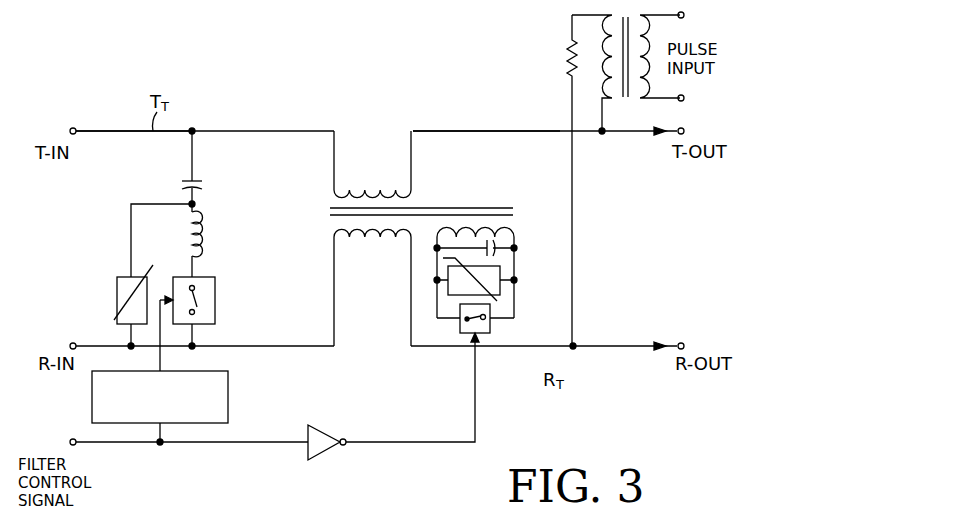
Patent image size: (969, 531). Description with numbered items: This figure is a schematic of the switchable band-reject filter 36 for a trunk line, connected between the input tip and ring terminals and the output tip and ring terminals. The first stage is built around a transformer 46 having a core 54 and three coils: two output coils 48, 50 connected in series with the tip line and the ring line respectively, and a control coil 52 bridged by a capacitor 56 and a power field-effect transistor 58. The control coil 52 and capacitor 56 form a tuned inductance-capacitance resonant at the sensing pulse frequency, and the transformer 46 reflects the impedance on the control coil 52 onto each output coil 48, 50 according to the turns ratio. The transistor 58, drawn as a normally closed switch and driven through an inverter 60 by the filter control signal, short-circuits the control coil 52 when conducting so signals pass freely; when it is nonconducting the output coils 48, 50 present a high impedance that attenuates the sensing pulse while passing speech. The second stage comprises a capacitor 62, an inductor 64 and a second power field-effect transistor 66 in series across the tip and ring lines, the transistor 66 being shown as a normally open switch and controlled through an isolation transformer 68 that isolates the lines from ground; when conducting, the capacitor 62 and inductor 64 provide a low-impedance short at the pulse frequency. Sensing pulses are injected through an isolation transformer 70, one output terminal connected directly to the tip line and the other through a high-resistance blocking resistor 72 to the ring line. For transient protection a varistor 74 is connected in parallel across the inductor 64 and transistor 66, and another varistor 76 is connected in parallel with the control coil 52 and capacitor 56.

The switchable band-reject filter 36 is at (210, 89).
The transformer 46 is at (461, 111).
The transformer coil 48 is at (333, 196).
The transformer coil 50 is at (335, 225).
The control coil 52 is at (480, 235).
The core 54 is at (410, 208).
The capacitor 56 is at (496, 248).
The power field-effect transistor 58 is at (490, 326).
The inverter 60 is at (320, 452).
The capacitor 62 is at (205, 183).
The inductor 64 is at (207, 237).
The second power field-effect transistor 66 is at (216, 301).
The isolation transformer 68 is at (228, 392).
The isolation transformer 70 is at (629, 97).
The blocking resistor 72 is at (566, 50).
The varistor 74 is at (116, 298).
The varistor 76 is at (500, 293).